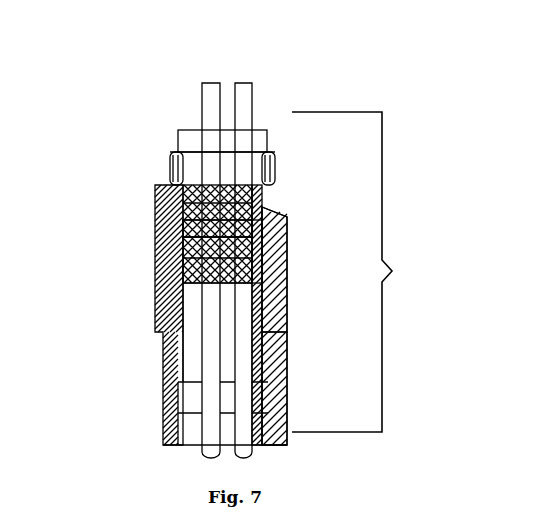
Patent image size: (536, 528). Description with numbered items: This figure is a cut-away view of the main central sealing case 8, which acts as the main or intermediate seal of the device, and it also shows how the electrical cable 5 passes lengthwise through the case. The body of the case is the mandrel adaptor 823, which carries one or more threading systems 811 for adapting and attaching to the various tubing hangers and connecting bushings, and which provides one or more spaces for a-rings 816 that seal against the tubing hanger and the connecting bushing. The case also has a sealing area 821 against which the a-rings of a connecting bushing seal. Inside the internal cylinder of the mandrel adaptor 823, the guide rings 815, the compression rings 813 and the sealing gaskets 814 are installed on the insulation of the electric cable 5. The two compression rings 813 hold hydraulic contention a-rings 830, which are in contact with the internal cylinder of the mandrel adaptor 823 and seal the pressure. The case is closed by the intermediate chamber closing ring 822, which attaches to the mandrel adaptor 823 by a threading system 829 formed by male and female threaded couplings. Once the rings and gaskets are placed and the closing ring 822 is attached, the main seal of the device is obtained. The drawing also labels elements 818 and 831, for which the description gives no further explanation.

The electrical cable 5 is at (247, 93).
The main central sealing case 8 is at (392, 271).
The threading system 811 is at (176, 197).
The compression ring 813 is at (192, 222).
The sealing gasket 814 is at (240, 240).
The guide ring 815 is at (188, 267).
The space for a-rings 816 is at (282, 370).
The insert 818 is at (185, 200).
The sealing area 821 is at (192, 430).
The intermediate chamber closing ring 822 is at (262, 143).
The mandrel adaptor 823 is at (275, 252).
The threading system 829 is at (180, 163).
The hydraulic contention a-ring 830 is at (257, 216).
The inner sleeve 831 is at (263, 230).